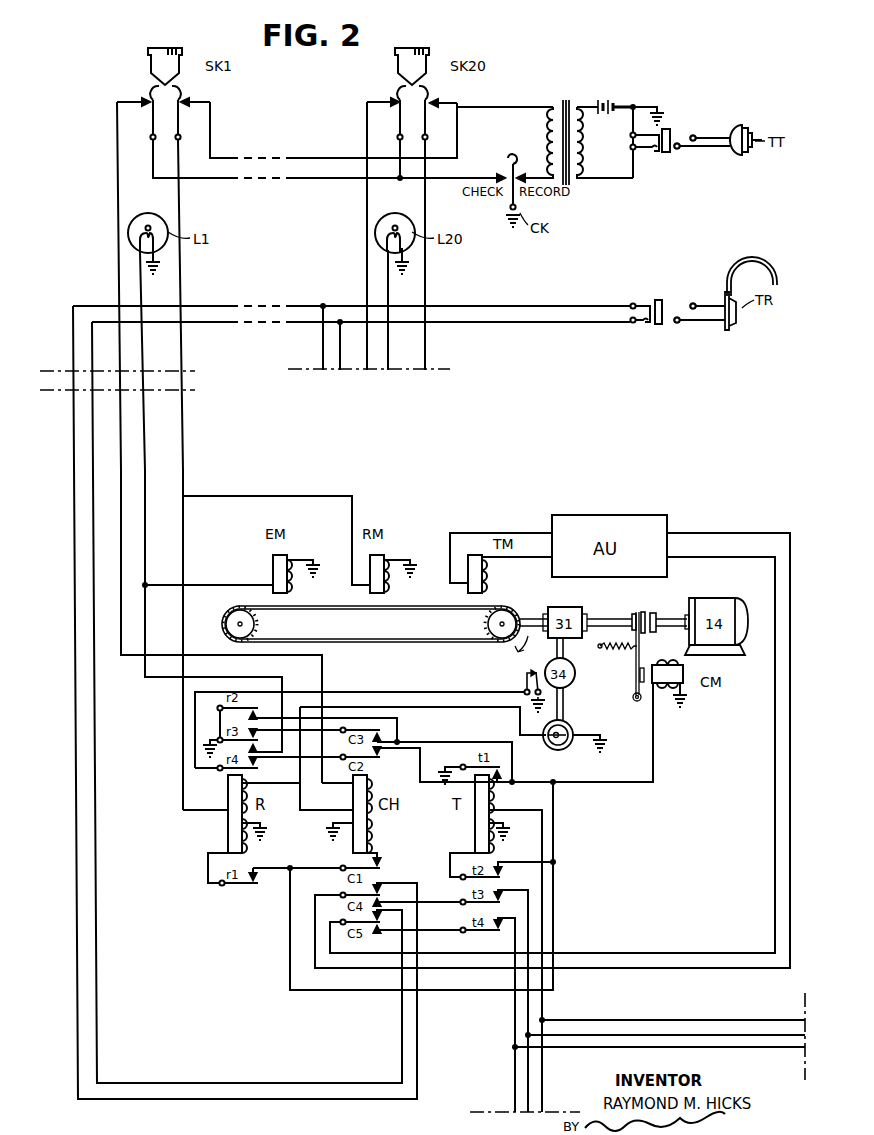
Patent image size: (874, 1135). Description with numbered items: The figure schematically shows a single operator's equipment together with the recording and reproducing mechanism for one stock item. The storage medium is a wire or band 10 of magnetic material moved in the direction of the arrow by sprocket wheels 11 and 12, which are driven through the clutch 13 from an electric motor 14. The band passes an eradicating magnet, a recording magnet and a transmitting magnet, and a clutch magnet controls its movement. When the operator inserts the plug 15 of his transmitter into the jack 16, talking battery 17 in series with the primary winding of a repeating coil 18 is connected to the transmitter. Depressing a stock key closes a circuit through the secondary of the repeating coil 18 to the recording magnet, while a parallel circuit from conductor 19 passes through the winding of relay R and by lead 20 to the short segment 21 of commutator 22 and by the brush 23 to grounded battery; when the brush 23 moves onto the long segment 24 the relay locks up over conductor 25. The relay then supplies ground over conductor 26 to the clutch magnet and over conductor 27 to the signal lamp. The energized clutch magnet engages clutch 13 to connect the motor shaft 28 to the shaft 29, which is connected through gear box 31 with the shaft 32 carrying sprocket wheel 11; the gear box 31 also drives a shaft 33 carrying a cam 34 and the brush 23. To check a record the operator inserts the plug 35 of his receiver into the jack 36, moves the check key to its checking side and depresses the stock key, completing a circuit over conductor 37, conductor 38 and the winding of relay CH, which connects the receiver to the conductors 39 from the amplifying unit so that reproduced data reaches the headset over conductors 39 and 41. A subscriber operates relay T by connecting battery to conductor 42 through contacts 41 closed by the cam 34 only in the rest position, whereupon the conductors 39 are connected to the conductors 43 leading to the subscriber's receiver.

The wire or band of magnetic material 10 is at (397, 644).
The sprocket wheel 11 is at (490, 624).
The sprocket wheel 12 is at (258, 620).
The clutch 13 is at (648, 611).
The electric motor 14 is at (716, 626).
The plug 15 is at (691, 133).
The jack 16 is at (662, 132).
The talking battery 17 is at (605, 100).
The repeating coil 18 is at (565, 104).
The conductor 19 is at (181, 352).
The lead 20 is at (434, 707).
The short segment 21 is at (546, 746).
The commutator 22 is at (555, 748).
The brush 23 is at (574, 729).
The long segment 24 is at (572, 750).
The conductor 25 is at (463, 990).
The conductor 26 is at (578, 783).
The conductor 27 is at (142, 356).
The motor shaft 28 is at (663, 631).
The shaft 29 is at (598, 619).
The gear box 31 is at (565, 622).
The shaft 32 is at (529, 620).
The shaft 33 is at (567, 656).
The cam 34 is at (560, 673).
The plug 35 is at (700, 305).
The jack 36 is at (647, 305).
The conductor 37 is at (303, 179).
The conductor 38 is at (119, 364).
The conductors 39 is at (628, 966).
The contacts 41 is at (89, 358).
The conductor 42 is at (544, 1084).
The conductors 43 is at (528, 1094).